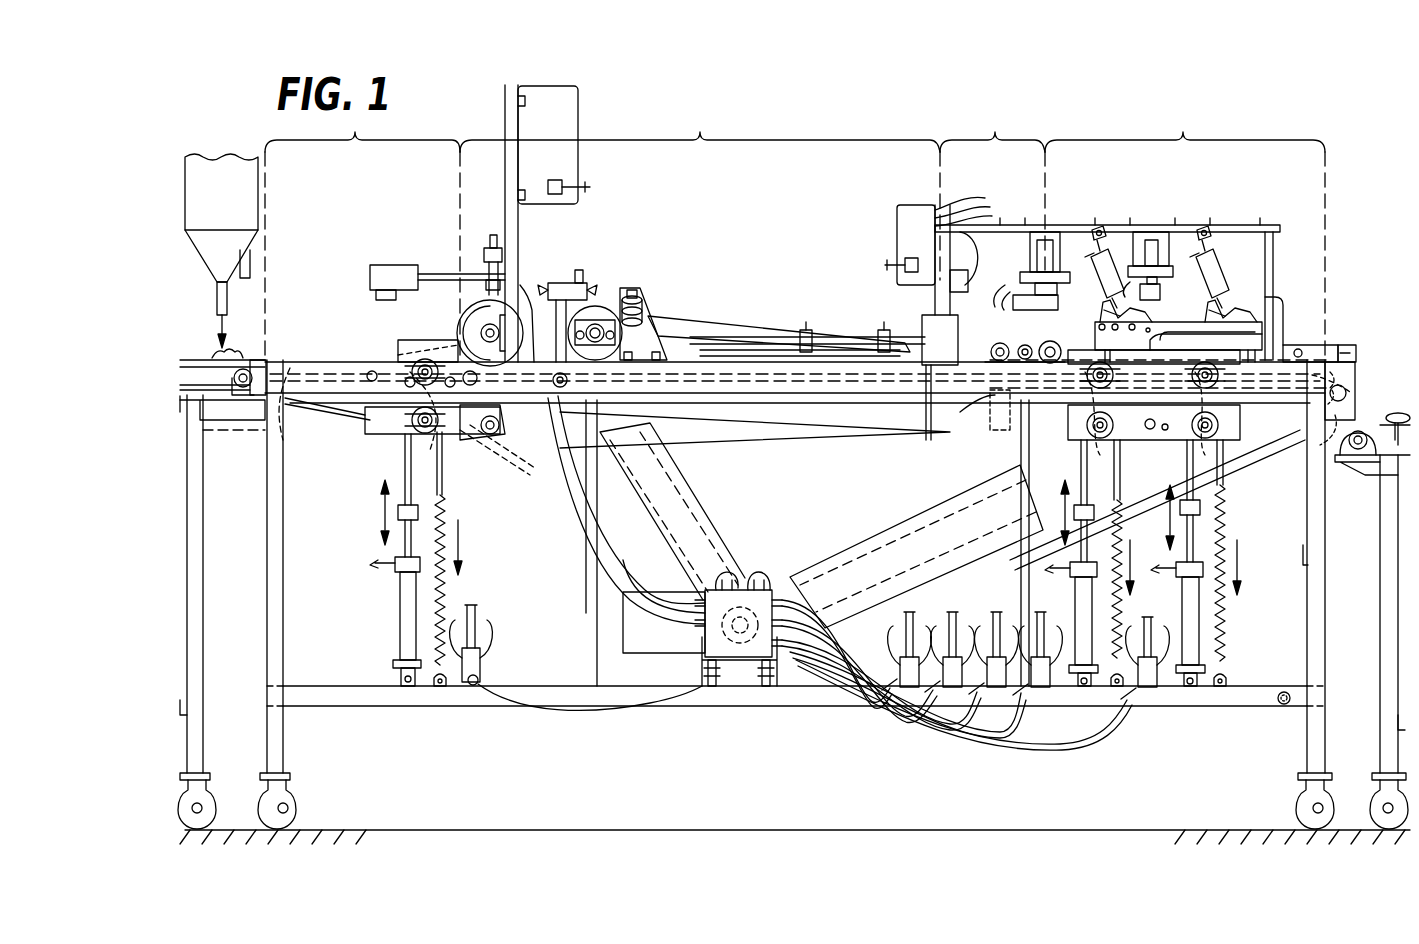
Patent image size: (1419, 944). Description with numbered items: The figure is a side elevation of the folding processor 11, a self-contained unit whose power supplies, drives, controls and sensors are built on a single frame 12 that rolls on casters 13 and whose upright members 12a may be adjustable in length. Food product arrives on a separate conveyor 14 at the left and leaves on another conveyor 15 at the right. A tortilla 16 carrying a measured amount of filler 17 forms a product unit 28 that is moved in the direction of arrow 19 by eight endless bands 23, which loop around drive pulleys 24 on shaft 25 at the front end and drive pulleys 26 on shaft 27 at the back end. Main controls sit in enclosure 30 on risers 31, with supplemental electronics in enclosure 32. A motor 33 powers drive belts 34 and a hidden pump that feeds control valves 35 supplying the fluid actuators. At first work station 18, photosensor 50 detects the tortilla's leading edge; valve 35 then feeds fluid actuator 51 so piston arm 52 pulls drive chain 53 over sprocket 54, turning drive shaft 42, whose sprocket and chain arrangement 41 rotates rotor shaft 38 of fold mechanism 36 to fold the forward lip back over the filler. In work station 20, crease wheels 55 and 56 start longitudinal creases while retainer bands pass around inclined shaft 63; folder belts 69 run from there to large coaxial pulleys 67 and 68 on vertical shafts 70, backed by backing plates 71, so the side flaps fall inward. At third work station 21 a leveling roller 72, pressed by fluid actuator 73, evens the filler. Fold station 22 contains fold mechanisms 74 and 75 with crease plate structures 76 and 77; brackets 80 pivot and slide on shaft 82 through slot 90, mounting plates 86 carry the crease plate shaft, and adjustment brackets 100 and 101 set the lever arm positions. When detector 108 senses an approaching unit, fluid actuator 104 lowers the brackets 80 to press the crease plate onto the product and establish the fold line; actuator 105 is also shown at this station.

The folding processor 11 is at (876, 128).
The frame 12 is at (318, 709).
The upright members 12a is at (272, 547).
The casters 13 is at (300, 796).
The conveyor 14 is at (222, 440).
The conveyor 15 is at (1377, 495).
The tortilla 16 is at (198, 357).
The filler 17 is at (230, 357).
The first work station 18 is at (362, 234).
The arrow 19 is at (345, 305).
The work station 20 is at (700, 234).
The third work station 21 is at (992, 196).
The fold station 22 is at (1185, 237).
The endless belts or bands 23 is at (370, 363).
The drive pulleys 24 is at (270, 368).
The shaft 25 is at (292, 430).
The drive pulleys 26 is at (1386, 408).
The shaft 27 is at (1360, 362).
The product unit 28 is at (1388, 430).
The enclosure 30 is at (575, 172).
The risers 31 is at (519, 225).
The enclosure 32 is at (888, 202).
The motor 33 is at (750, 580).
The drive chains or belts 34 is at (325, 395).
The control valves 35 is at (483, 672).
The first fold mechanism 36 is at (437, 335).
The rotor shaft 38 is at (418, 357).
The sprocket and chain arrangement 41 is at (450, 455).
The drive shaft 42 is at (406, 440).
The photosensor 50 is at (385, 265).
The fluid actuator 51 is at (398, 606).
The piston arm 52 is at (402, 540).
The drive chain 53 is at (448, 478).
The sprocket 54 is at (365, 418).
The crease wheels 55 is at (468, 330).
The crease wheels 56 is at (603, 312).
The inclined shaft 63 is at (634, 290).
The pulley 67 is at (925, 325).
The pulley 68 is at (912, 430).
The folder belts or bands 69 is at (672, 340).
The vertical shafts 70 is at (928, 440).
The backing plates 71 is at (830, 352).
The leveling roller 72 is at (998, 343).
The fluid actuator 73 is at (995, 418).
The fold mechanism 74 is at (1072, 360).
The fold mechanism 75 is at (1235, 344).
The crease plate structure 76 is at (1088, 320).
The crease plate structure 77 is at (1242, 296).
The brackets 80 is at (1186, 322).
The shaft 82 is at (1300, 348).
The mounting plates 86 is at (1100, 333).
The slot 90 is at (1320, 347).
The adjustment bracket 100 is at (1165, 295).
The adjustment bracket 101 is at (1265, 325).
The fluid actuator 104 is at (1100, 240).
The tilted cylinder 105 is at (1235, 292).
The detector 108 is at (1020, 298).